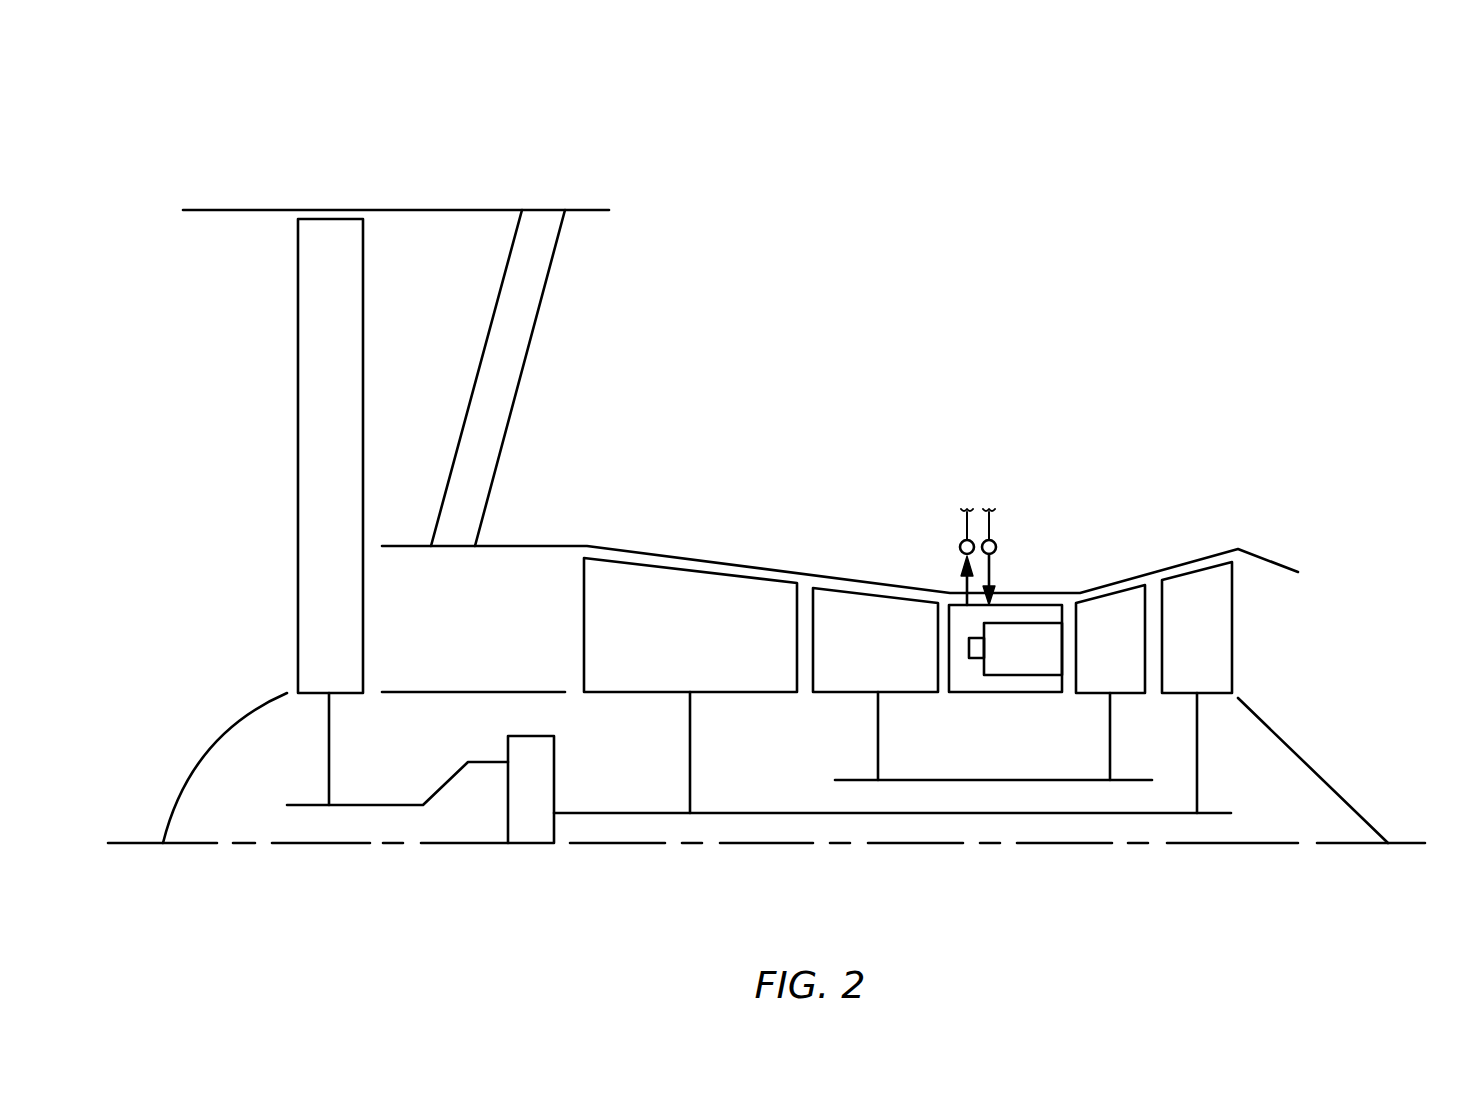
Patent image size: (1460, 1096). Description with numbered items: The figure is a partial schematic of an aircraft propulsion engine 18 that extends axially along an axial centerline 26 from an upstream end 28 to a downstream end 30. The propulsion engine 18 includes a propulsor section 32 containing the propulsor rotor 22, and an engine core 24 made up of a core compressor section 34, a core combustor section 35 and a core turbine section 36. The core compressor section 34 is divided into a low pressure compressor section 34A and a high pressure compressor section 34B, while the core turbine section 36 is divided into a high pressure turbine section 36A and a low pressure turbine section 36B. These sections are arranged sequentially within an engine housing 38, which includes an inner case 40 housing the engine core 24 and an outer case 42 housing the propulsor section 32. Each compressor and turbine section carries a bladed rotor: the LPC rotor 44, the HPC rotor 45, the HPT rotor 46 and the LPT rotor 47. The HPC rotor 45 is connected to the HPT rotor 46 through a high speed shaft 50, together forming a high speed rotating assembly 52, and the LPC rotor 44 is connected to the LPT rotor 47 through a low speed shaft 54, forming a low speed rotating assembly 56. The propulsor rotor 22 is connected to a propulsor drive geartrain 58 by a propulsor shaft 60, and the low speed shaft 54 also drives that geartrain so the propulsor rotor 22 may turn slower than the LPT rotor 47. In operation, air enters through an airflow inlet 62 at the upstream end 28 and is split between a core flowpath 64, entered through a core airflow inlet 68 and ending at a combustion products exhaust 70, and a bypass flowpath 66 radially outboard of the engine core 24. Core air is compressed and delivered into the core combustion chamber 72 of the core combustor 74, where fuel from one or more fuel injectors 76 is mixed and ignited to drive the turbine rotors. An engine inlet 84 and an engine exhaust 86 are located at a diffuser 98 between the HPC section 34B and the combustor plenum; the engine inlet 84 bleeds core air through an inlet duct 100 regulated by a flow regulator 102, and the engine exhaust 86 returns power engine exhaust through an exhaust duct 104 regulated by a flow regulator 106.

The propulsion engine 18 is at (164, 131).
The propulsor rotor 22 is at (330, 748).
The engine core 24 is at (934, 879).
The axial centerline 26 is at (193, 845).
The upstream end 28 is at (185, 210).
The downstream end 30 is at (1388, 843).
The propulsor section 32 is at (338, 196).
The core compressor section 34 is at (578, 393).
The low pressure compressor section 34A is at (578, 482).
The high pressure compressor section 34B is at (810, 482).
The core combustor section 35 is at (1065, 482).
The core turbine section 36 is at (1068, 393).
The high pressure turbine section 36A is at (1075, 483).
The low pressure turbine section 36B is at (1157, 483).
The engine housing 38 is at (627, 192).
The inner case 40 is at (530, 546).
The outer case 42 is at (493, 210).
The LPC rotor 44 is at (692, 752).
The HPC rotor 45 is at (876, 745).
The HPT rotor 46 is at (1112, 737).
The LPT rotor 47 is at (1198, 770).
The high speed shaft 50 is at (920, 780).
The high speed rotating assembly 52 is at (803, 780).
The low speed shaft 54 is at (1027, 815).
The low speed rotating assembly 56 is at (1243, 817).
The propulsor drive geartrain 58 is at (530, 845).
The propulsor shaft 60 is at (383, 808).
The airflow inlet 62 is at (185, 316).
The core flowpath 64 is at (447, 631).
The bypass flowpath 66 is at (406, 396).
The core airflow inlet 68 is at (375, 618).
The combustion products exhaust 70 is at (1284, 650).
The core combustion chamber 72 is at (1015, 658).
The core combustor 74 is at (1035, 623).
The fuel injector 76 is at (969, 650).
The engine inlet 84 is at (962, 600).
The engine exhaust 86 is at (992, 600).
The diffuser 98 is at (949, 622).
The inlet duct 100 is at (961, 572).
The flow regulator 102 is at (959, 541).
The exhaust duct 104 is at (993, 575).
The flow regulator 106 is at (996, 541).